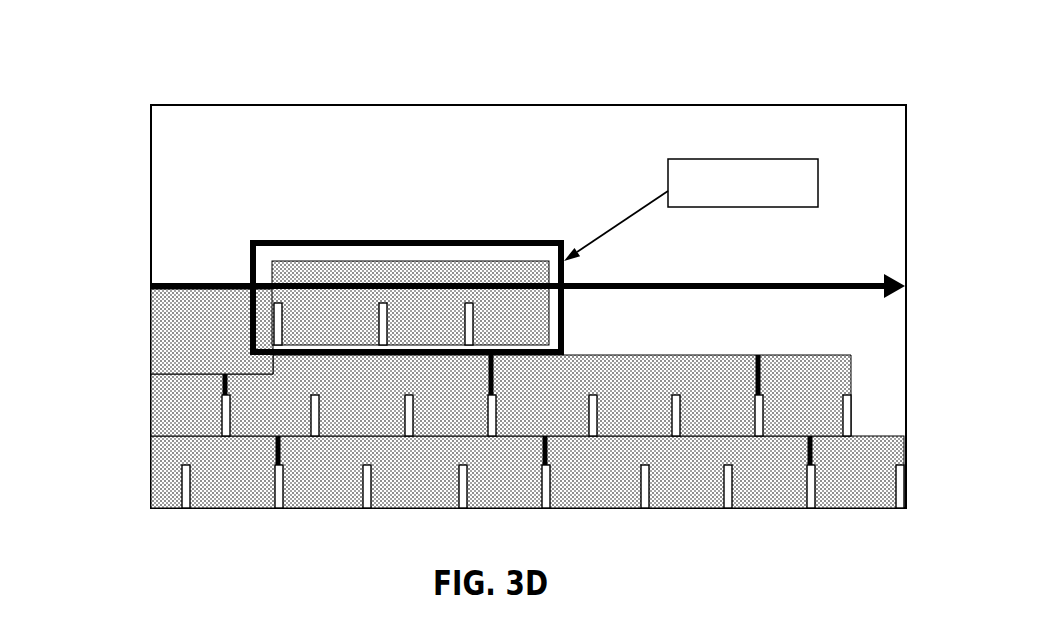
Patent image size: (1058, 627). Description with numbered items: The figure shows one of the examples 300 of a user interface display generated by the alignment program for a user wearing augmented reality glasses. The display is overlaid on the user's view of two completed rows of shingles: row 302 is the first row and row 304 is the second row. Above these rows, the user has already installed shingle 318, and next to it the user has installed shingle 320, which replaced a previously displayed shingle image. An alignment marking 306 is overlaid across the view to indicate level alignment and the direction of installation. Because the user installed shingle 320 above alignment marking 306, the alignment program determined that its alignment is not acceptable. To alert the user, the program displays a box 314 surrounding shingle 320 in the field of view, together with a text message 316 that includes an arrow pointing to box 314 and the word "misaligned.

The examples 300 is at (524, 61).
The row 302 is at (160, 481).
The row 304 is at (160, 407).
The alignment marking 306 is at (716, 282).
The box 314 is at (367, 242).
The text message 316 is at (668, 172).
The shingle 318 is at (160, 332).
The shingle 320 is at (328, 276).